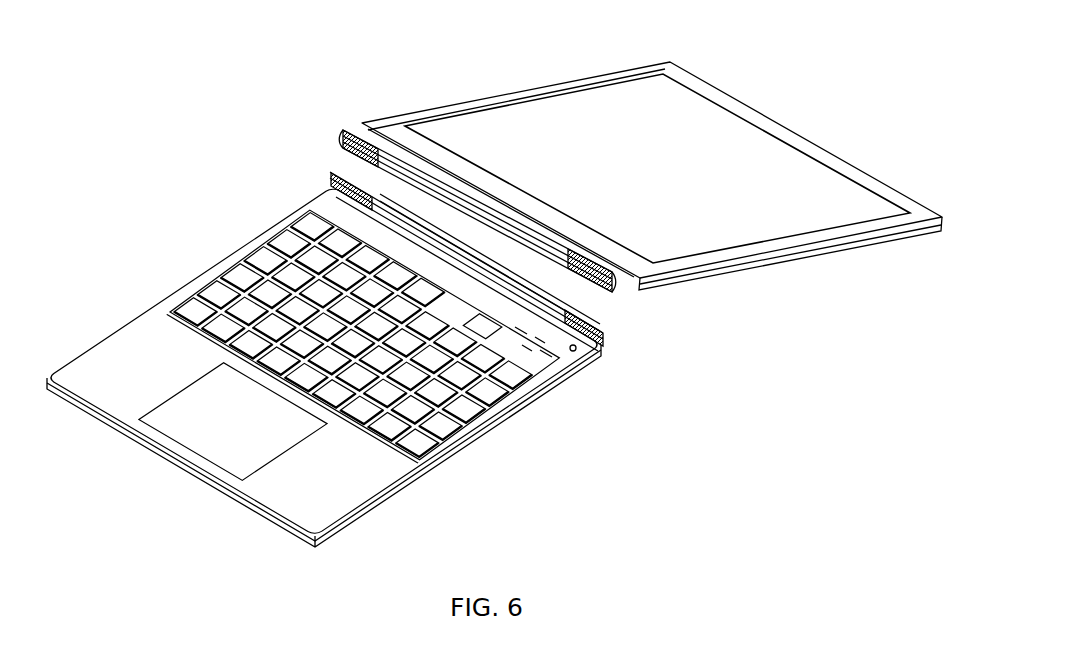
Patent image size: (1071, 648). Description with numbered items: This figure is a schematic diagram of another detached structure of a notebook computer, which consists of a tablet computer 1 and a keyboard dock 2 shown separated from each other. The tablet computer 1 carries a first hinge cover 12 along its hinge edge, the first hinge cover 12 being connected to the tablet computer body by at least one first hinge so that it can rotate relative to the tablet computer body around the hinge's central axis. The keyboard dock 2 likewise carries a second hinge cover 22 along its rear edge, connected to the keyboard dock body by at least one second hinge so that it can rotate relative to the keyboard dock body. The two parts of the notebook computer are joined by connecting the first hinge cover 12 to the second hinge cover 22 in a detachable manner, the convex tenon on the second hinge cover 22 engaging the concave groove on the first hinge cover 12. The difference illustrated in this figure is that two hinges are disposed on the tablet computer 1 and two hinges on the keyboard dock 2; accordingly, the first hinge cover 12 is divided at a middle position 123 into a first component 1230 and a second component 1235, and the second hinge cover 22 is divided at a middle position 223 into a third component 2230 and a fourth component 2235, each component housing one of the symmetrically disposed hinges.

The tablet computer 1 is at (672, 110).
The first hinge cover 12 is at (553, 247).
The middle position 123 is at (487, 178).
The first component 1230 is at (440, 190).
The second component 1235 is at (530, 213).
The keyboard dock 2 is at (178, 410).
The second hinge cover 22 is at (543, 298).
The middle position 223 is at (468, 283).
The third component 2230 is at (417, 222).
The fourth component 2235 is at (502, 332).